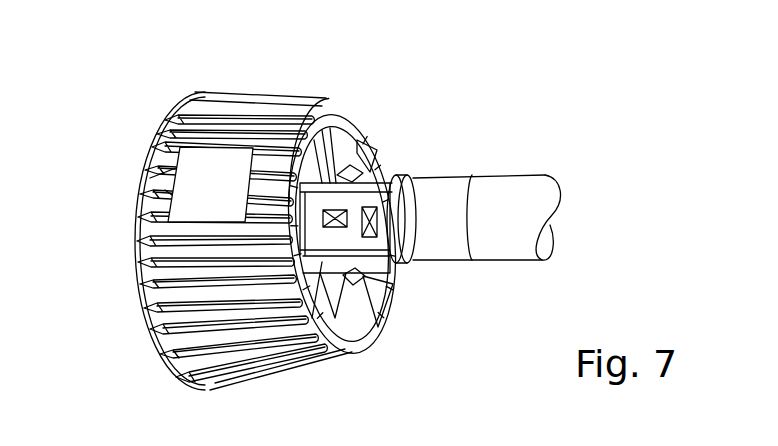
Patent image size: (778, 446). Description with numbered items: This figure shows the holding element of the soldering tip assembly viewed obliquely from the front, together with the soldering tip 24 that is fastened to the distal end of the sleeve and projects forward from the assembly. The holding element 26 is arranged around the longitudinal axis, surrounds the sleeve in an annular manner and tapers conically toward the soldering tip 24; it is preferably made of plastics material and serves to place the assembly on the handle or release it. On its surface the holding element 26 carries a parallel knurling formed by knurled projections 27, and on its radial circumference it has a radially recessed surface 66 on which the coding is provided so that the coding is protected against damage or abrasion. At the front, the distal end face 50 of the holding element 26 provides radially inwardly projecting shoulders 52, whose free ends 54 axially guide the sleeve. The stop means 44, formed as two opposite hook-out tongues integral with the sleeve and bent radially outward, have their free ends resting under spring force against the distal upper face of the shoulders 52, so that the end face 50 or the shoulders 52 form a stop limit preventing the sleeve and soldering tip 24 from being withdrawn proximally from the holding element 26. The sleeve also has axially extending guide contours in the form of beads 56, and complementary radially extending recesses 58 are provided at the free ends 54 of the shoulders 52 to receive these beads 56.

The soldering tip 24 is at (520, 190).
The holding element 26 is at (272, 97).
The knurled projections 27 is at (207, 103).
The stop means 44 is at (352, 178).
The distal end face 50 is at (357, 137).
The shoulders 52 is at (348, 155).
The free ends 54 is at (323, 132).
The beads 56 is at (345, 227).
The recesses 58 is at (323, 228).
The radially recessed surface 66 is at (178, 163).